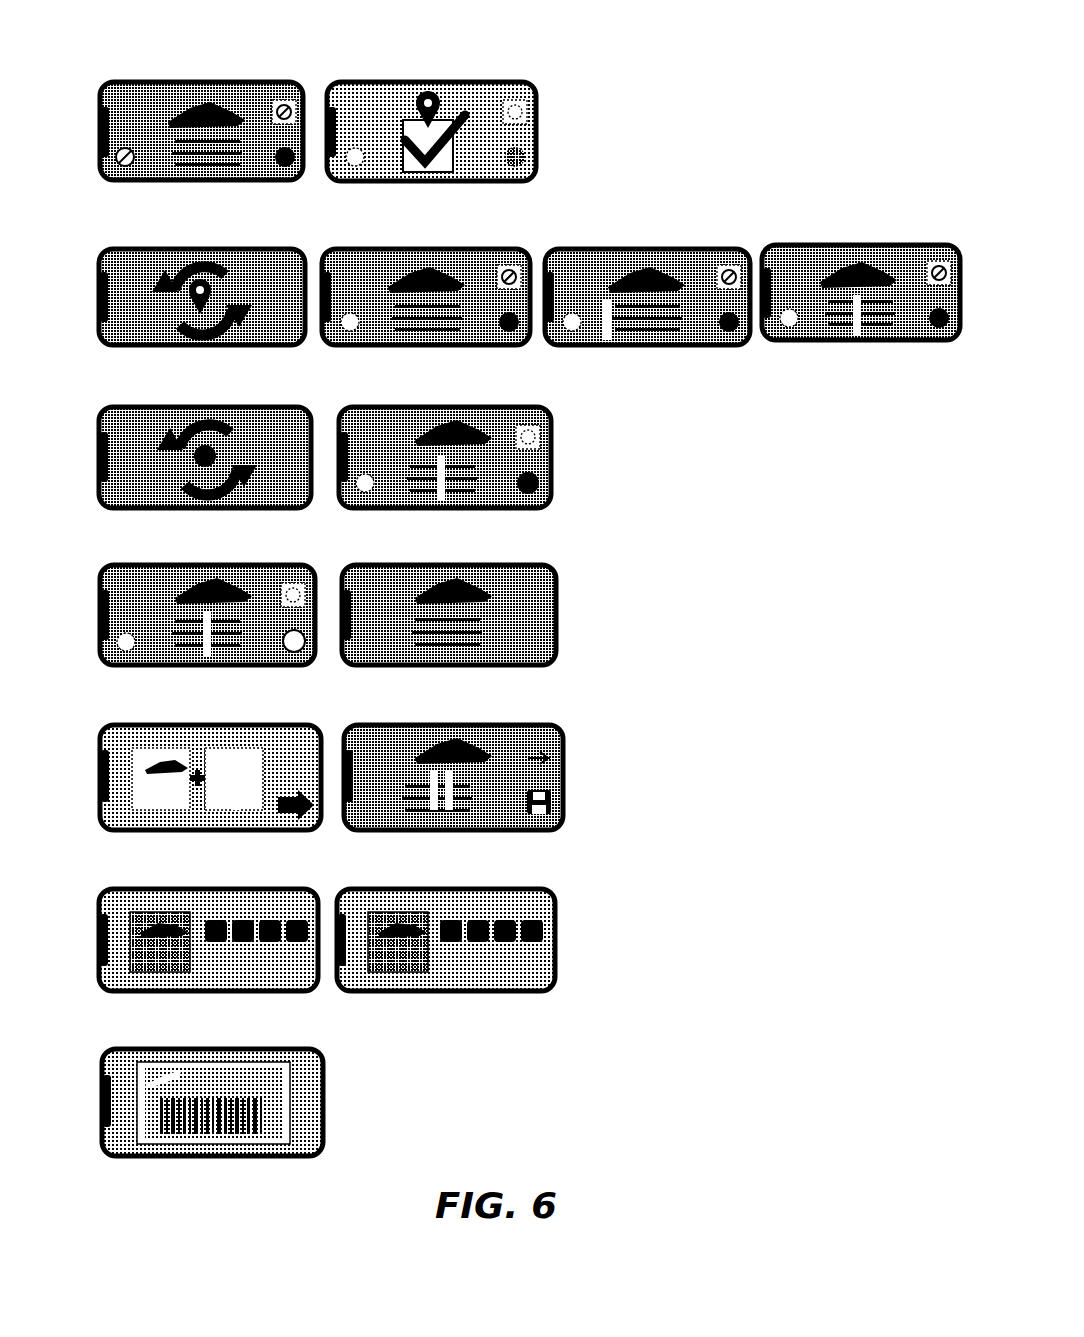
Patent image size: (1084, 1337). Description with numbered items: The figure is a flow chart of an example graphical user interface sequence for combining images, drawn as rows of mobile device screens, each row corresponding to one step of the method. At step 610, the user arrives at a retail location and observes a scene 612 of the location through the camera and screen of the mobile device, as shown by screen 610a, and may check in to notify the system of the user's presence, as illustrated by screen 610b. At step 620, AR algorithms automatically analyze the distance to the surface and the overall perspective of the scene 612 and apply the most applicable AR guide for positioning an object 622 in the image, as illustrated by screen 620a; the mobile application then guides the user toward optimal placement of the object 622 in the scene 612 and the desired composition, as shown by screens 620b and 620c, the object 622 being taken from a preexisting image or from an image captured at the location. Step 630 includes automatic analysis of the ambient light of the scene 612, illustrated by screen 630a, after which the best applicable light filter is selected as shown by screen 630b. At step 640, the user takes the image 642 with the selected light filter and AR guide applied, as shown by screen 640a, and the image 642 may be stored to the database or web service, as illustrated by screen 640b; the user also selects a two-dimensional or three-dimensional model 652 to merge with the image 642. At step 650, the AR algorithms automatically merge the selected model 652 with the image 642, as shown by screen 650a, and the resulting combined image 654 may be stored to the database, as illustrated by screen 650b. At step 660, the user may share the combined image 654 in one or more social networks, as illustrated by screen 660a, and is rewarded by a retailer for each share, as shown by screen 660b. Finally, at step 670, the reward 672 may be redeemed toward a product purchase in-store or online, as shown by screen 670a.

The step of arriving at retail location 610 is at (90, 134).
The scene observation screen 610a is at (210, 72).
The check-in screen 610b is at (467, 72).
The scene 612 is at (226, 125).
The step of applying AR guide 620 is at (90, 309).
The AR guide selection screen 620a is at (219, 237).
The object placement guidance screen 620b is at (450, 202).
The object placement guidance screen 620c is at (638, 237).
The object 622 is at (425, 305).
The step of analyzing ambient light 630 is at (90, 472).
The ambient light analysis screen 630a is at (242, 395).
The light filter selection screen 630b is at (498, 393).
The step of taking image 640 is at (90, 631).
The image capture screen 640a is at (235, 555).
The image storage screen 640b is at (848, 235).
The image 642 is at (490, 460).
The step of merging model with image 650 is at (90, 779).
The merging screen 650a is at (250, 713).
The combined image storage screen 650b is at (502, 713).
The 2D/3D model 652 is at (456, 466).
The combined image 654 is at (500, 770).
The step of sharing combined image 660 is at (90, 951).
The social sharing screen 660a is at (228, 877).
The reward screen 660b is at (483, 875).
The step of redeeming reward 670 is at (90, 1094).
The reward redemption screen 670a is at (237, 1038).
The reward 672 is at (265, 1105).